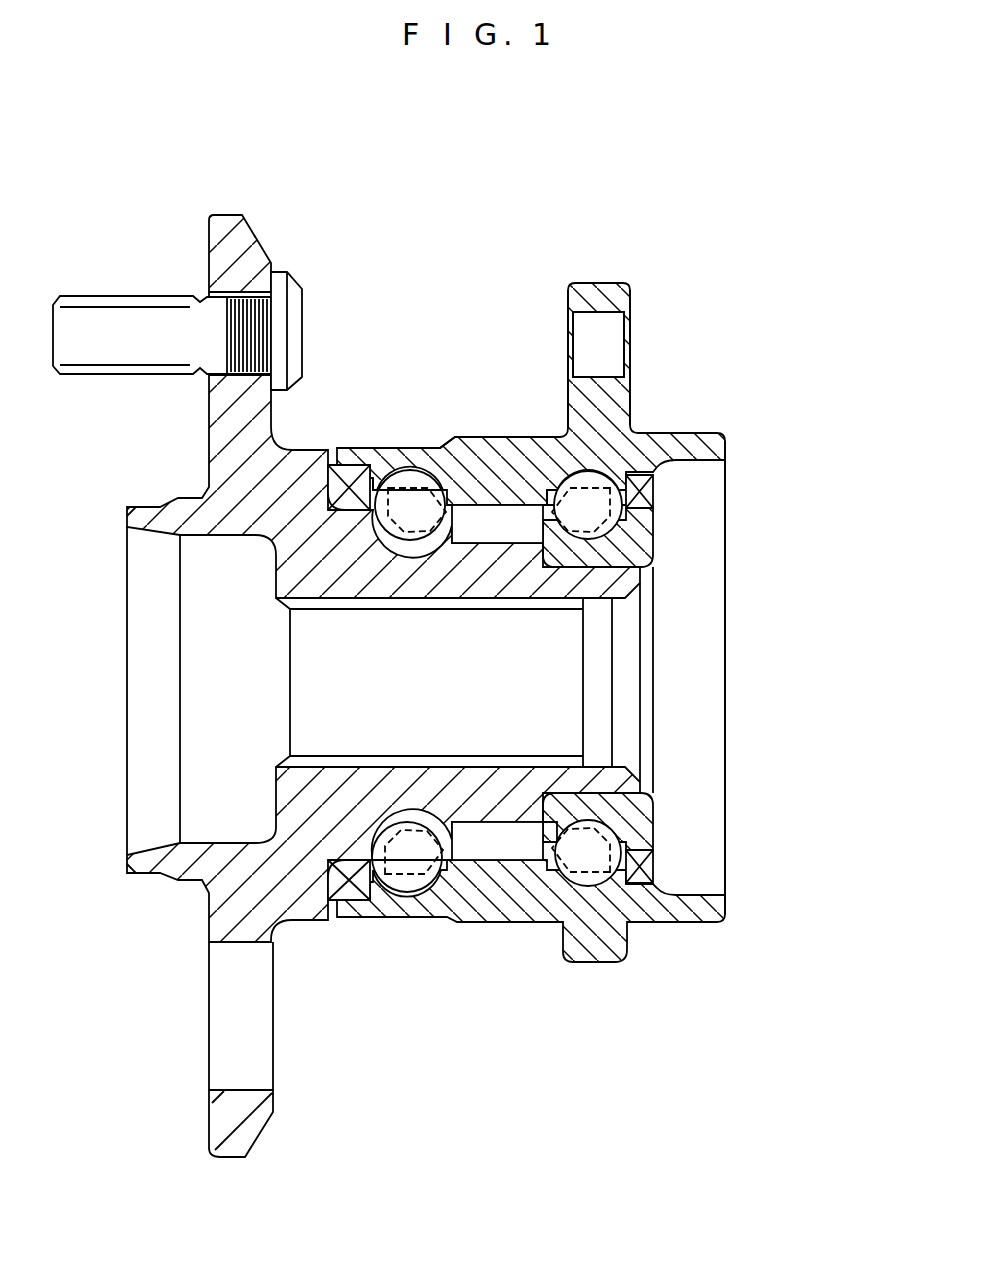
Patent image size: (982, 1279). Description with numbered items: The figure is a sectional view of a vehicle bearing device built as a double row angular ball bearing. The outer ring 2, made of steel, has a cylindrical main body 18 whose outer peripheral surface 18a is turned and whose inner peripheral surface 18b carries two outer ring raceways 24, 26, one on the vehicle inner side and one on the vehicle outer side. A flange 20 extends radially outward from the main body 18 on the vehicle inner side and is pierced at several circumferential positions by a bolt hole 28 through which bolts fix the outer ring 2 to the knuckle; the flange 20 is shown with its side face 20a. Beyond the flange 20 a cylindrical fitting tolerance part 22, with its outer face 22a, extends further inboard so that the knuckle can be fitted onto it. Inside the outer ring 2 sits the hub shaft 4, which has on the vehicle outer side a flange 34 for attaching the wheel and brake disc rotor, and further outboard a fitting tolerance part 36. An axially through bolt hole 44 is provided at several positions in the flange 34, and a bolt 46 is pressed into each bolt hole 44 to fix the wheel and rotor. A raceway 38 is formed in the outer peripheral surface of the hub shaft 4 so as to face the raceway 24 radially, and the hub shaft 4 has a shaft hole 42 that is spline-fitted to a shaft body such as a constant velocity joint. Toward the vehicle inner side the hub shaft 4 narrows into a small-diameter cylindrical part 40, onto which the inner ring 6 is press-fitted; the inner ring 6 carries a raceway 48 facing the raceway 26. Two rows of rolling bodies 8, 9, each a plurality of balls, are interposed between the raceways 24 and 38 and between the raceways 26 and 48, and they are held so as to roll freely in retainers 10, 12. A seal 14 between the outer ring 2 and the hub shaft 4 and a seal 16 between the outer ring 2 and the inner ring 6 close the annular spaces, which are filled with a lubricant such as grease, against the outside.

The outer ring 2 is at (482, 424).
The hub shaft 4 is at (127, 893).
The inner ring 6 is at (679, 833).
The rolling bodies 8 is at (410, 890).
The rolling bodies 9 is at (578, 878).
The retainer 10 is at (431, 475).
The retainer 12 is at (540, 472).
The seal 14 is at (352, 473).
The seal 16 is at (653, 488).
The cylindrical main body 18 is at (506, 468).
The outer peripheral surface 18a is at (460, 470).
The inner peripheral surface 18b is at (497, 508).
The flange 20 is at (594, 284).
The flange side face 20a is at (632, 390).
The cylindrical fitting tolerance part 22 is at (707, 443).
The flange outer face 22a is at (724, 477).
The outer ring raceway 24 is at (447, 875).
The outer ring raceway 26 is at (557, 870).
The bolt hole 28 is at (584, 325).
The flange 34 is at (226, 213).
The fitting tolerance part 36 is at (148, 512).
The raceway 38 is at (408, 473).
The small-diameter cylindrical part 40 is at (614, 776).
The shaft hole 42 is at (495, 720).
The bolt hole 44 is at (255, 287).
The bolt 46 is at (300, 315).
The raceway 48 is at (612, 838).